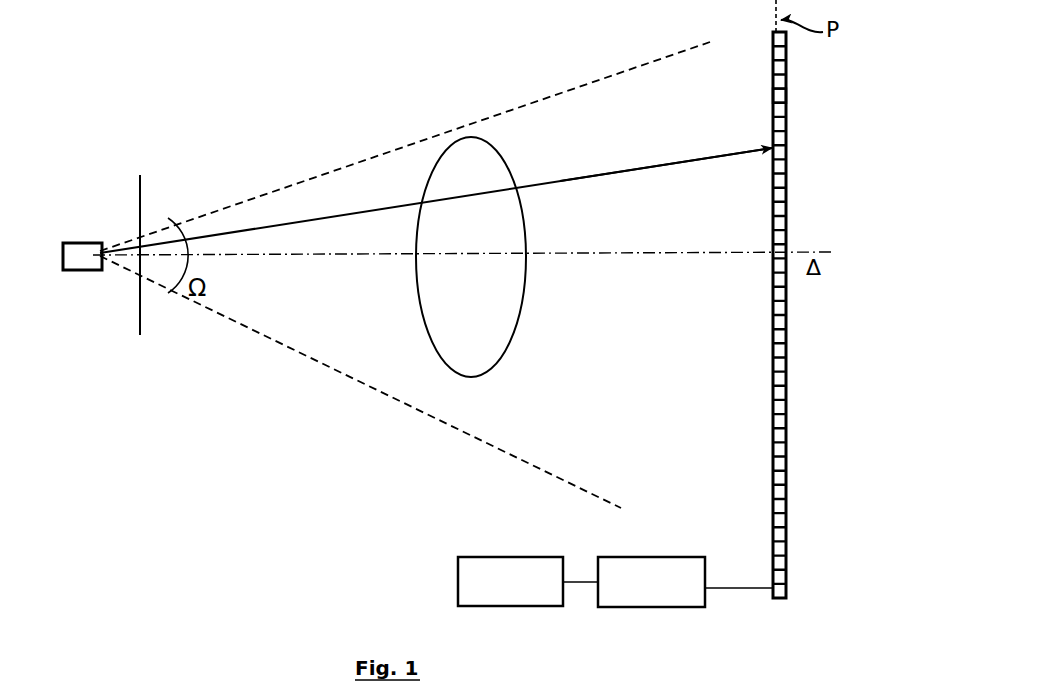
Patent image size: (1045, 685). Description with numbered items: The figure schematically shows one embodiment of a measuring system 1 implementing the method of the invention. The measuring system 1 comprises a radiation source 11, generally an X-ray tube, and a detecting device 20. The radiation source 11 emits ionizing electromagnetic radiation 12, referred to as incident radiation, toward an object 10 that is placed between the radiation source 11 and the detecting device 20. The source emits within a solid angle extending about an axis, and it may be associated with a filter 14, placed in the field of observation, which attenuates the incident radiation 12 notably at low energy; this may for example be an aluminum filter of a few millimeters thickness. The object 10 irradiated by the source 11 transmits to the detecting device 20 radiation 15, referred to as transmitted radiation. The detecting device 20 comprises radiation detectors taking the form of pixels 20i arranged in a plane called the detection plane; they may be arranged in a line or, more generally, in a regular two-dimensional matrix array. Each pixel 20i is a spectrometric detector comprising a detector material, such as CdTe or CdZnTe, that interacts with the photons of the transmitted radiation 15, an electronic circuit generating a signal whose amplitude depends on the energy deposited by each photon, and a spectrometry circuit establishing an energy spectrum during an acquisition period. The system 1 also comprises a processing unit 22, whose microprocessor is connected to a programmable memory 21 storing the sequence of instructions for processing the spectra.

The measuring system 1 is at (131, 111).
The object 10 is at (514, 174).
The radiation source 11 is at (88, 273).
The incident radiation 12 is at (323, 212).
The filter 14 is at (143, 177).
The transmitted radiation 15 is at (590, 171).
The detecting device 20 is at (780, 601).
The pixel 20i is at (785, 90).
The programmable memory 21 is at (651, 582).
The processing unit 22 is at (510, 581).